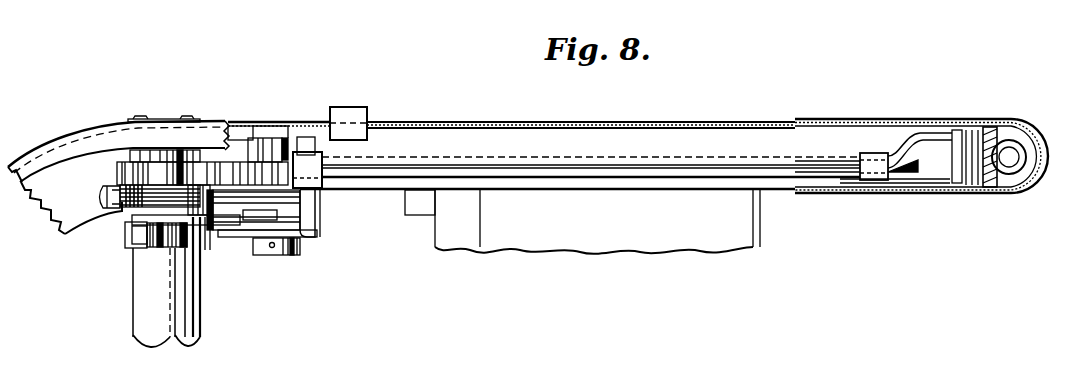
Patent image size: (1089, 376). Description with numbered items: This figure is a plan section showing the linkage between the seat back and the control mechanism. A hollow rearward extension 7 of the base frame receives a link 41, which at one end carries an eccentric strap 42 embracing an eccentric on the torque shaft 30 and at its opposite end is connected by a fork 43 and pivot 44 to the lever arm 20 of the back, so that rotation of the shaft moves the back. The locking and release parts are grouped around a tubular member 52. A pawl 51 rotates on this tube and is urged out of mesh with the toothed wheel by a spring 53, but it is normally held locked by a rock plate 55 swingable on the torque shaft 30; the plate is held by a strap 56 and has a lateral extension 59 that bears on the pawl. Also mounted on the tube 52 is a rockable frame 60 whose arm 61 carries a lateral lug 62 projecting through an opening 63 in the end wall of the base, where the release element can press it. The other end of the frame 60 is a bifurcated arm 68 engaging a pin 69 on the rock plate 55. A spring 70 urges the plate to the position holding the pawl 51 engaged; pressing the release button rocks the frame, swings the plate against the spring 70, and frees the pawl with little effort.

The rearward extension 7 is at (383, 133).
The extension or lever arm 20 is at (1016, 140).
The torque shaft 30 is at (145, 298).
The link 41 is at (478, 165).
The eccentric strap 42 is at (153, 172).
The fork 43 is at (912, 138).
The pivot 44 is at (984, 132).
The pawl 51 is at (293, 237).
The tubular member 52 is at (263, 150).
The spring 53 is at (273, 247).
The rock plate 55 is at (130, 232).
The strap 56 is at (135, 243).
The lateral extension 59 is at (212, 200).
The frame 60 is at (315, 237).
The arm 61 is at (302, 140).
The lateral lug 62 is at (343, 115).
The opening 63 is at (373, 123).
The bifurcated arm 68 is at (240, 237).
The pin 69 is at (218, 235).
The spring 70 is at (167, 248).